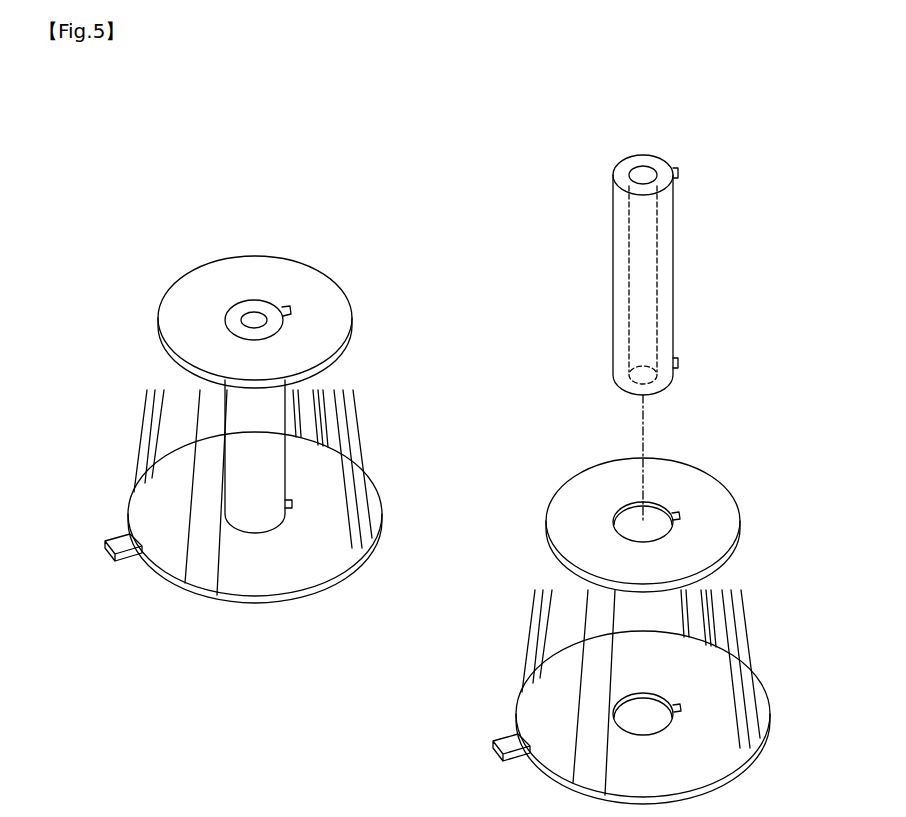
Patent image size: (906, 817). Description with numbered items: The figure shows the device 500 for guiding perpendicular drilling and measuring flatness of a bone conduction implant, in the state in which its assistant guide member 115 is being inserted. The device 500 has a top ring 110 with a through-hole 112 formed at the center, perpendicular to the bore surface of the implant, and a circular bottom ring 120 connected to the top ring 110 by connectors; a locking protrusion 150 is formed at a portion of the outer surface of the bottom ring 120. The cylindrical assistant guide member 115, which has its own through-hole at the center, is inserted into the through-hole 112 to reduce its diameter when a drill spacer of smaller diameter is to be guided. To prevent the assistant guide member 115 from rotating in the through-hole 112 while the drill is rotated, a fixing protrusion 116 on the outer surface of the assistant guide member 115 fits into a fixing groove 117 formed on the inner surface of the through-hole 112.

The device for guiding perpendicular drilling and measuring flatness of a bone condu 500 is at (547, 465).
The top ring 110 is at (335, 320).
The through-hole 112 is at (251, 270).
The assistant guide member 115 is at (262, 305).
The fixing protrusion 116 is at (677, 172).
The fixing groove 117 is at (676, 512).
The bottom ring 120 is at (272, 582).
The locking protrusion 150 is at (112, 548).